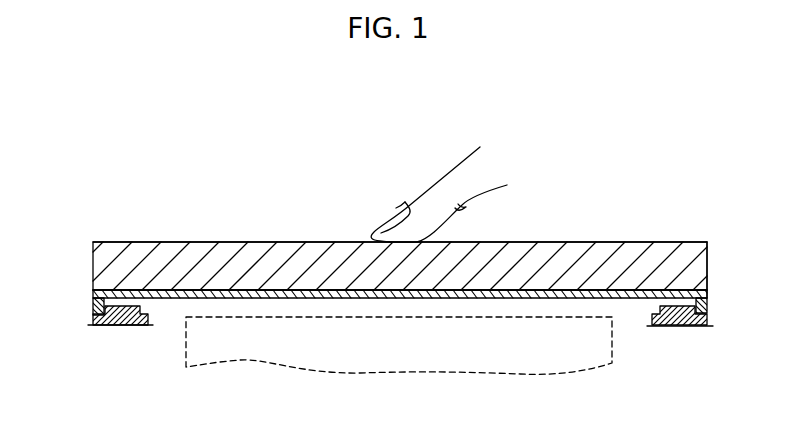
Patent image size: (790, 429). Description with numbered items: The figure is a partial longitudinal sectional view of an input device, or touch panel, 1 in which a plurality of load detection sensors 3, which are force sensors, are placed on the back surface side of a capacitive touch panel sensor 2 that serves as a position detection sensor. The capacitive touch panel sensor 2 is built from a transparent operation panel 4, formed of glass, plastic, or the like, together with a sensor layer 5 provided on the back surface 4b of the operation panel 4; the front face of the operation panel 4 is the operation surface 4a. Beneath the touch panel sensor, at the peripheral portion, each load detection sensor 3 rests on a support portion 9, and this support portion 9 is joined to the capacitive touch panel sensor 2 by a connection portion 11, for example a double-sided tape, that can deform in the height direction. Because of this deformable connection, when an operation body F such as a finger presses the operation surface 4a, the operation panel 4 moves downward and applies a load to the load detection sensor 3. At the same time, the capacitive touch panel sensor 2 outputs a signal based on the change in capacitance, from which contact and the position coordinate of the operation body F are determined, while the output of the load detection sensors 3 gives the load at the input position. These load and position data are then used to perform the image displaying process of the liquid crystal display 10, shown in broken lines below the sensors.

The input device (touch panel) 1 is at (663, 224).
The capacitive touch panel sensor 2 is at (707, 264).
The load detection sensor 3 is at (132, 325).
The operation panel 4 is at (93, 265).
The operation surface 4a is at (250, 242).
The back surface 4b is at (183, 290).
The sensor layer 5 is at (93, 293).
The support portion 9 is at (93, 323).
The liquid crystal display 10 is at (612, 340).
The connection portion 11 is at (93, 307).
The operation body F is at (422, 194).